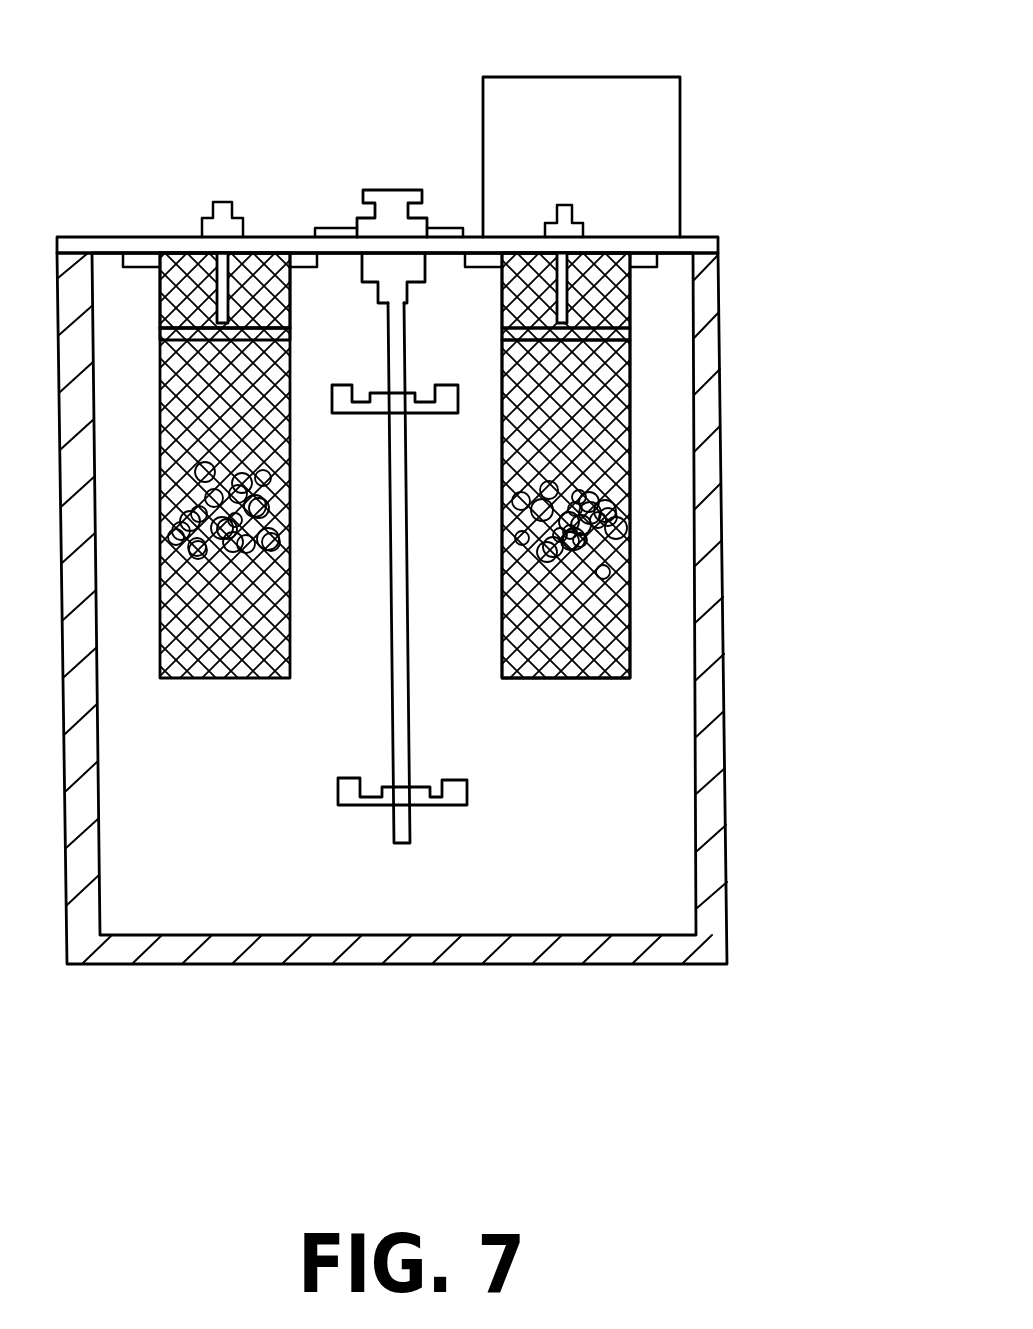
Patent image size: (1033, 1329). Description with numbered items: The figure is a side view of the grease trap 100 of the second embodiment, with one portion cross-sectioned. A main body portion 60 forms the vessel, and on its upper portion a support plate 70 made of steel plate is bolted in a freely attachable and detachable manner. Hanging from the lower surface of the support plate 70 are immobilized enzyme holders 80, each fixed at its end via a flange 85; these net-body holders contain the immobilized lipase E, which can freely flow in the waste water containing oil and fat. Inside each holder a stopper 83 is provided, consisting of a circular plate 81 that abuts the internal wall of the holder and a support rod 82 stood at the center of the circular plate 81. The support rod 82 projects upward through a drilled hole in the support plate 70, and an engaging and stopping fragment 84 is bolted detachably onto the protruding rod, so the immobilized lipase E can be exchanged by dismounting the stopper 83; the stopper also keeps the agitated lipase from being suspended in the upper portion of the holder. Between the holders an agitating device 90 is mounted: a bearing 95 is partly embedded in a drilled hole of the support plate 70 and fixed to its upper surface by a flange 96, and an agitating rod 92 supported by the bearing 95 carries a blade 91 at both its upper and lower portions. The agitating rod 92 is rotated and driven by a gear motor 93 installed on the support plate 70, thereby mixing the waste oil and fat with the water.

The grease trap 100 is at (333, 82).
The main body portion 60 is at (715, 892).
The support plate 70 is at (105, 237).
The immobilized enzyme holder 80 is at (485, 440).
The circular plate 81 is at (630, 333).
The support rod 82 is at (630, 292).
The stopper 83 is at (503, 331).
The engaging and stopping fragment 84 is at (585, 224).
The flange 85 is at (630, 266).
The agitating device 90 is at (376, 205).
The blade 91 is at (445, 414).
The agitating rod 92 is at (398, 692).
The motor 93 is at (663, 185).
The bearing 95 is at (399, 200).
The flange 96 is at (330, 230).
The immobilized lipase E is at (166, 503).